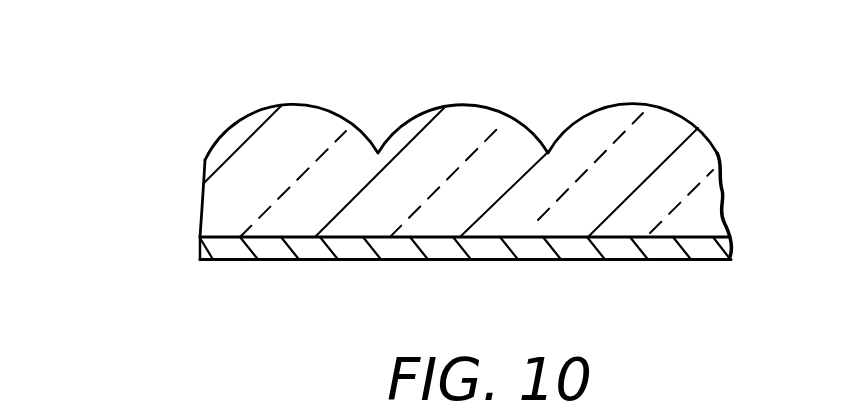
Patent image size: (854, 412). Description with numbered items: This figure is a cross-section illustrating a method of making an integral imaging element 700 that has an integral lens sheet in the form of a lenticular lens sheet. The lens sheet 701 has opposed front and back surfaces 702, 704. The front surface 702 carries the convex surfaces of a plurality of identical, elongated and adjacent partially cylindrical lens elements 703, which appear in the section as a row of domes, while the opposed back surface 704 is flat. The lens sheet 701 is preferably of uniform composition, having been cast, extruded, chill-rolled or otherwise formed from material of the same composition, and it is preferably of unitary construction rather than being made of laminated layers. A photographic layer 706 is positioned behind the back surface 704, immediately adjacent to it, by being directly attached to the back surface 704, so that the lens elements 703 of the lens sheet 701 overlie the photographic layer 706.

The integral imaging element 700 is at (425, 176).
The lens sheet 701 is at (677, 187).
The front surface 702 is at (663, 121).
The lens elements 703 is at (292, 109).
The back surface 704 is at (258, 238).
The photographic layer 706 is at (661, 247).